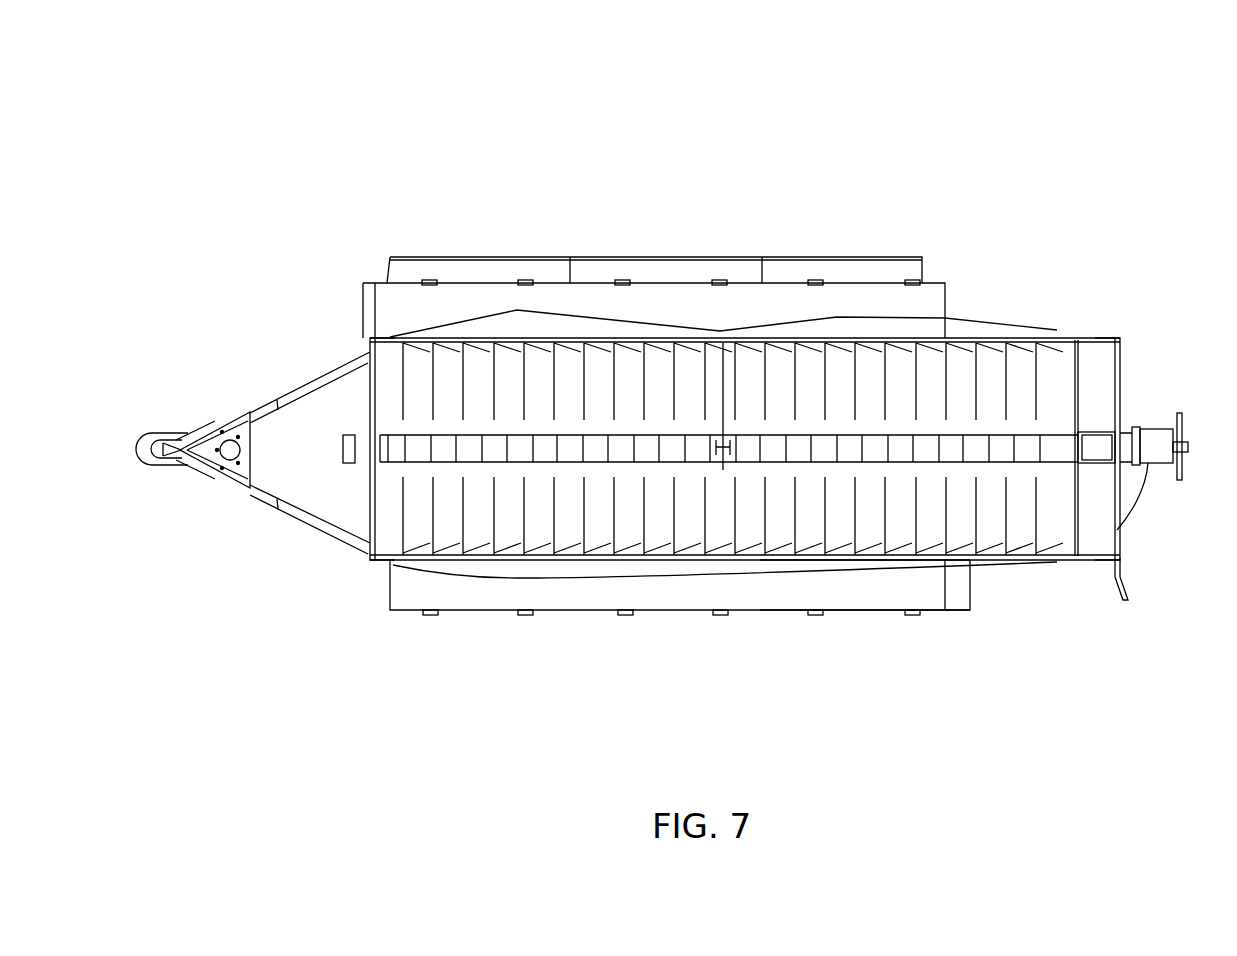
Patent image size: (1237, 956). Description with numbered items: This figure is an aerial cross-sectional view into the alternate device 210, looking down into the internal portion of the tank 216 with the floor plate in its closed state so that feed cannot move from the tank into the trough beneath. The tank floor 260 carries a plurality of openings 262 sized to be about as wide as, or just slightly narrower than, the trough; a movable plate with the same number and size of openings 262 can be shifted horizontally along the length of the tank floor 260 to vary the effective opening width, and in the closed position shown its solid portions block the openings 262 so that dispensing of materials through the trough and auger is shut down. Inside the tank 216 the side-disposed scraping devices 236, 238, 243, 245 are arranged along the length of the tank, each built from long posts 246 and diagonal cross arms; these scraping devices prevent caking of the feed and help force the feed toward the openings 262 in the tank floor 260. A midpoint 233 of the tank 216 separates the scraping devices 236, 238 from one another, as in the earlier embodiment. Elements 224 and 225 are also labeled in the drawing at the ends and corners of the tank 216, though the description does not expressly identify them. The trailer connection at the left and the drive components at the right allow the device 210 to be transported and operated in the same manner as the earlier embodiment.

The alternate device 210 is at (438, 180).
The tank 216 is at (660, 340).
The end walls 224 is at (362, 372).
The frame corner members 225 is at (388, 335).
The midpoint 233 is at (725, 355).
The scraping device 236 is at (553, 308).
The scraping device 238 is at (900, 312).
The scraping device 243 is at (558, 580).
The scraping device 245 is at (907, 580).
The long posts 246 is at (1038, 508).
The tank floor 260 is at (1122, 447).
The openings 262 is at (425, 457).